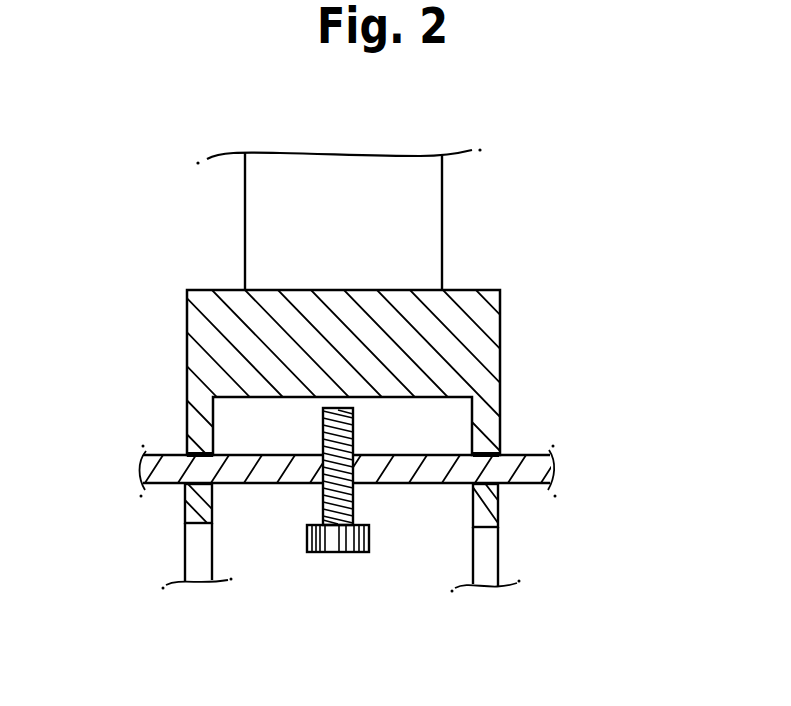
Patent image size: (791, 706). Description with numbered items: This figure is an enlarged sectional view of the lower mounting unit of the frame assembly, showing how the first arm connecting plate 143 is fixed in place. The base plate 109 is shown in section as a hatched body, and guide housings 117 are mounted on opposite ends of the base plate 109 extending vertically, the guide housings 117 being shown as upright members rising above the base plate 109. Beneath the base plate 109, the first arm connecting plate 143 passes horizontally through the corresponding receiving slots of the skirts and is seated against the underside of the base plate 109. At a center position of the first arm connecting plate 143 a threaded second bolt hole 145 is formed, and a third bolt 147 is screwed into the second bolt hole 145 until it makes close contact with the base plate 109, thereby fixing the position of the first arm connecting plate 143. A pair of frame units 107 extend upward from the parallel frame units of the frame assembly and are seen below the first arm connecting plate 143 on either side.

The frame units 107 is at (187, 550).
The base plate 109 is at (502, 325).
The guide housings 117 is at (434, 206).
The first arm connecting plate 143 is at (535, 488).
The second bolt hole 145 is at (323, 497).
The third bolt 147 is at (338, 552).